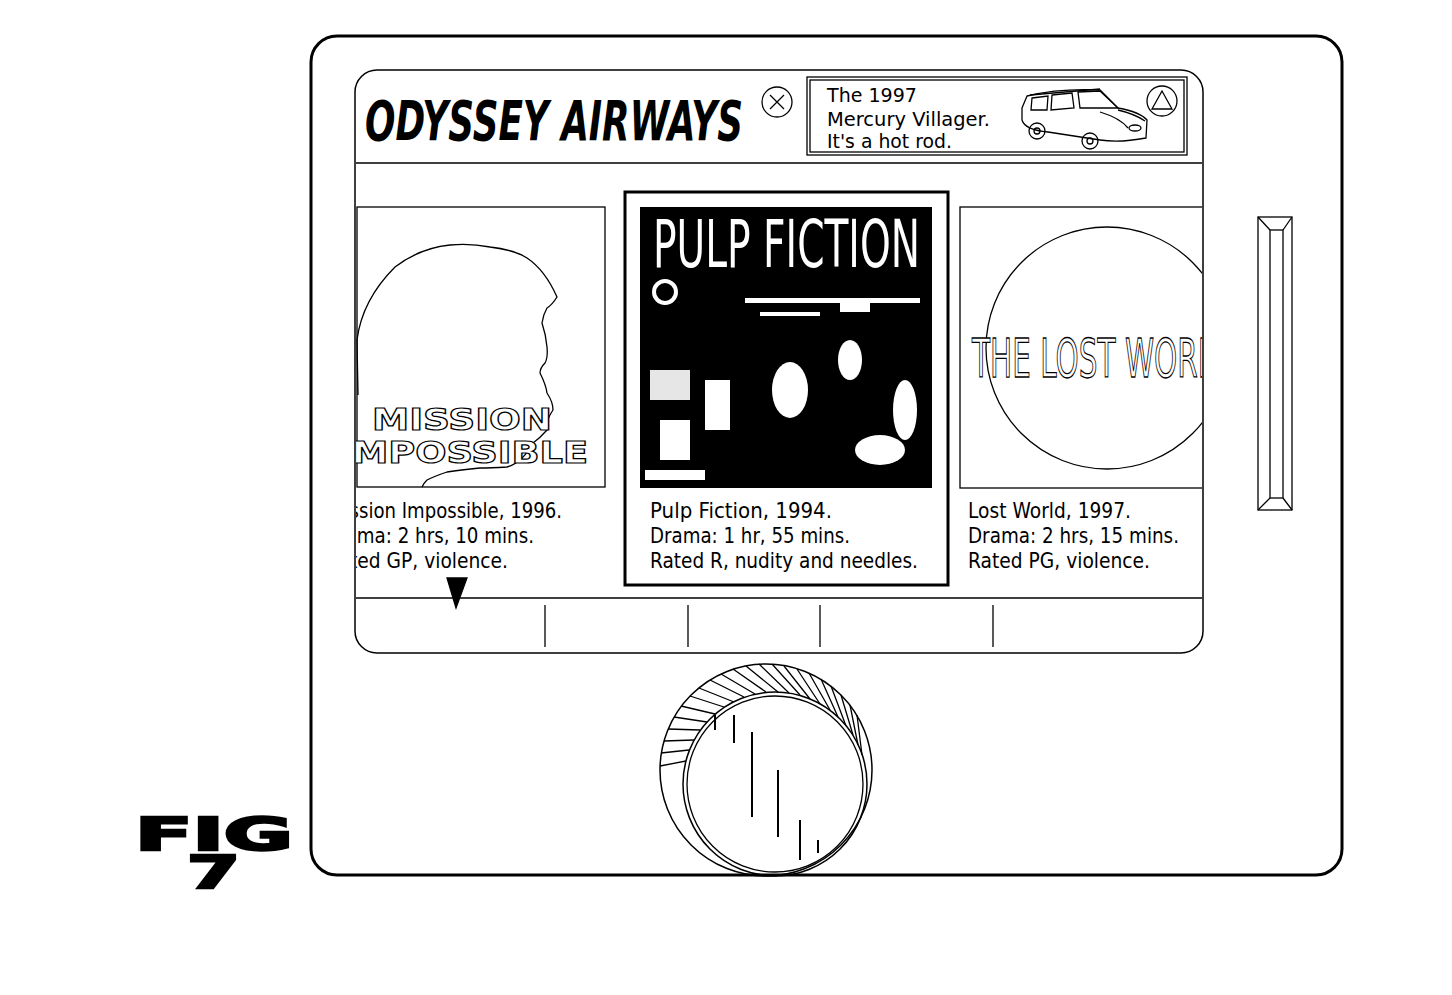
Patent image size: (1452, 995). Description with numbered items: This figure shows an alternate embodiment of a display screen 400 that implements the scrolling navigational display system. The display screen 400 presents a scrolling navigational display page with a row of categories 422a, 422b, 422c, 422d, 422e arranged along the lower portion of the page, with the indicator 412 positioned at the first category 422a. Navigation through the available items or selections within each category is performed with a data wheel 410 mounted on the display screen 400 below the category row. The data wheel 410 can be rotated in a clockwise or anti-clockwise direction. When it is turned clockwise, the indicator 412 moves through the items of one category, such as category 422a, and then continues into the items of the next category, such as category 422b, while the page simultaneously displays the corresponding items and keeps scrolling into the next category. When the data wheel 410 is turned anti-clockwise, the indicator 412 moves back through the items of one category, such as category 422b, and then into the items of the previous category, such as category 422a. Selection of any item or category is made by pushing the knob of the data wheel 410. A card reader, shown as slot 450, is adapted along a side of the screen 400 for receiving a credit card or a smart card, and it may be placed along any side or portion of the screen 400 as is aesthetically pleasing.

The display screen 400 is at (1360, 73).
The data wheel 410 is at (870, 778).
The indicator 412 is at (463, 588).
The category 422a is at (425, 641).
The category 422b is at (603, 642).
The category 422c is at (735, 639).
The category 422d is at (908, 641).
The category 422e is at (1097, 641).
The slot 450 is at (1277, 345).